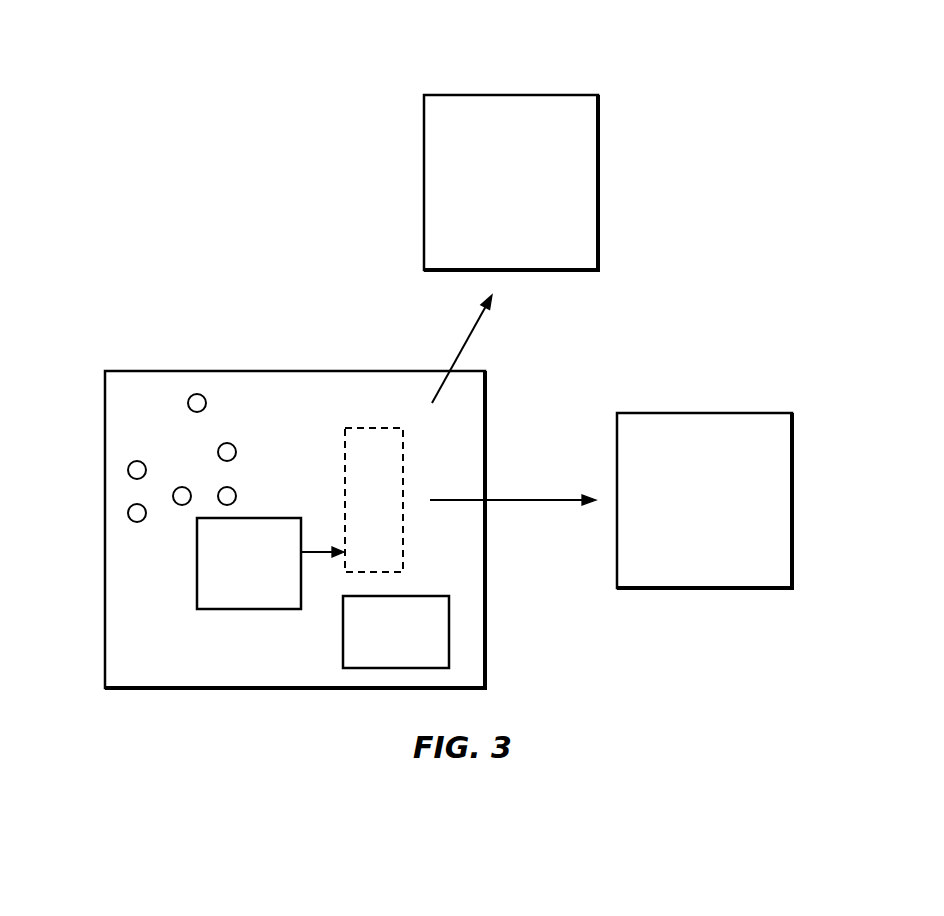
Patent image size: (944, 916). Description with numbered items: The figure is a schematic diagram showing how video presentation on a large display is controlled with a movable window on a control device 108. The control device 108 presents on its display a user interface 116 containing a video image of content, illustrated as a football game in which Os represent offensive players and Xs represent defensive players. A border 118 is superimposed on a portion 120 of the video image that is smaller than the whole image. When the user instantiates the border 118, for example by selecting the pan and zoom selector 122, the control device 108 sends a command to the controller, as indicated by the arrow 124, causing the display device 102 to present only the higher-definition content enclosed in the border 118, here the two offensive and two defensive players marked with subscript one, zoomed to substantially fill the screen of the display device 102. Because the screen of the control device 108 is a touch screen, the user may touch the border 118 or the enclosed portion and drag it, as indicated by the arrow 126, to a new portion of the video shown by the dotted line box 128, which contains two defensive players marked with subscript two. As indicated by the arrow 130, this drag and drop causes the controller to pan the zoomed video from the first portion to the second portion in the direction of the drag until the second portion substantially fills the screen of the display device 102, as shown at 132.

The display device 102 is at (598, 93).
The control device 108 is at (147, 370).
The user interface 116 is at (140, 430).
The border 118 is at (197, 567).
The portion of the video image 120 is at (197, 537).
The pan and zoom selector 122 is at (449, 628).
The arrow 124 is at (472, 335).
The arrow 126 is at (320, 552).
The dotted line box 128 is at (403, 449).
The arrow 130 is at (503, 500).
The second portion presentation on display device 132 is at (765, 495).